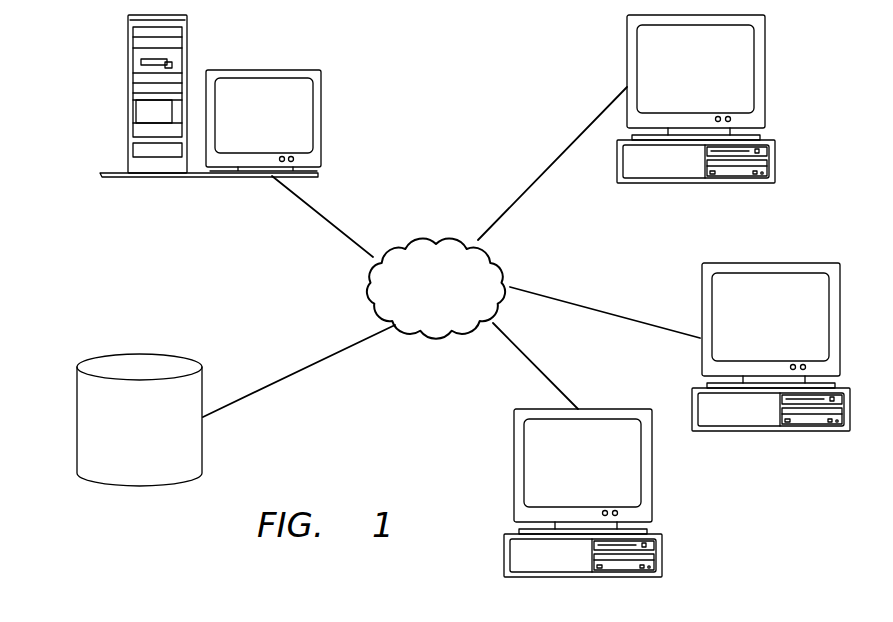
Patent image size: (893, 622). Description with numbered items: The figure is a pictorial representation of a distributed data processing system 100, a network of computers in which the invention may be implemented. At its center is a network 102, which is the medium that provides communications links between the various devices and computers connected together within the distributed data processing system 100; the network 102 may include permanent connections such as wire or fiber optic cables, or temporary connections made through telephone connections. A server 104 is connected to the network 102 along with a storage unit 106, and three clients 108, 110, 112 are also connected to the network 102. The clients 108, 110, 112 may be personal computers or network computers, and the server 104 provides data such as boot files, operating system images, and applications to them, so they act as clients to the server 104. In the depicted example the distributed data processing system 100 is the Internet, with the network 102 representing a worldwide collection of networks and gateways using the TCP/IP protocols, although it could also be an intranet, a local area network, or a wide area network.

The distributed data processing system 100 is at (97, 283).
The network 102 is at (418, 314).
The server 104 is at (244, 124).
The storage unit 106 is at (121, 458).
The client 108 is at (678, 83).
The client 110 is at (751, 333).
The client 112 is at (566, 478).